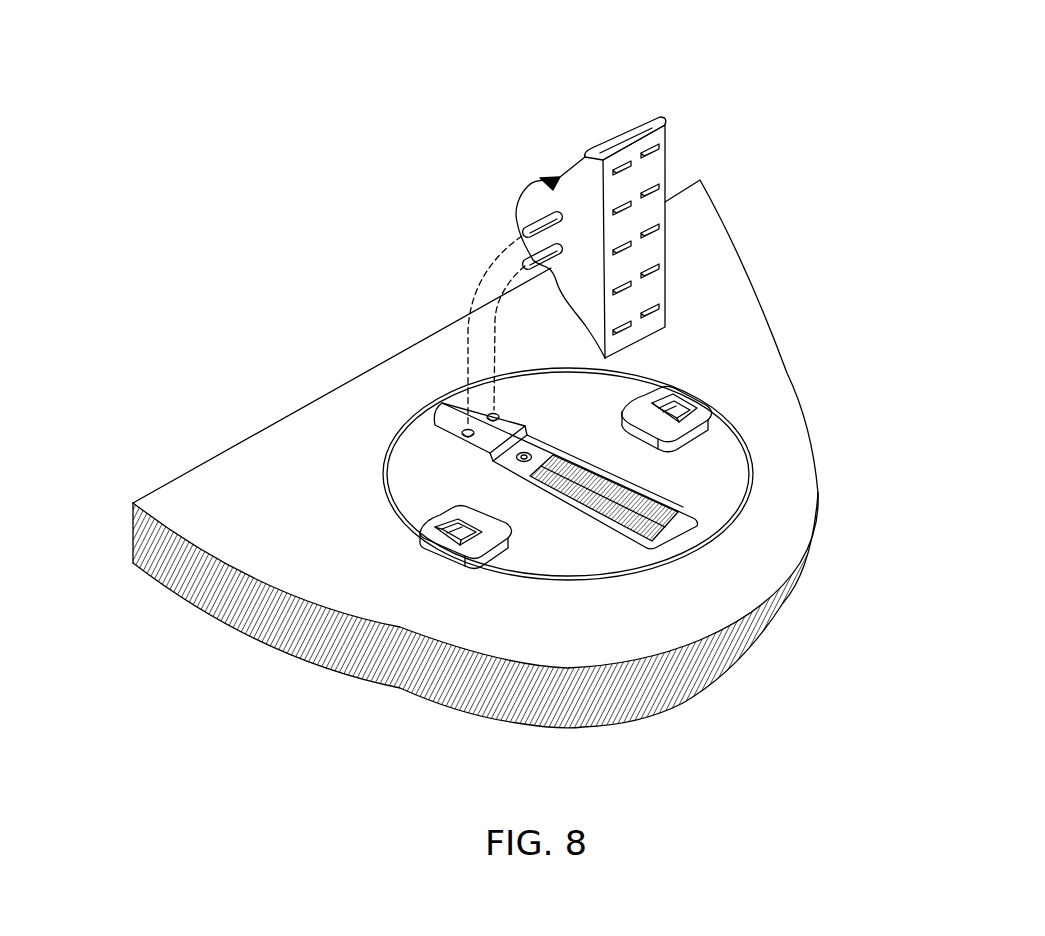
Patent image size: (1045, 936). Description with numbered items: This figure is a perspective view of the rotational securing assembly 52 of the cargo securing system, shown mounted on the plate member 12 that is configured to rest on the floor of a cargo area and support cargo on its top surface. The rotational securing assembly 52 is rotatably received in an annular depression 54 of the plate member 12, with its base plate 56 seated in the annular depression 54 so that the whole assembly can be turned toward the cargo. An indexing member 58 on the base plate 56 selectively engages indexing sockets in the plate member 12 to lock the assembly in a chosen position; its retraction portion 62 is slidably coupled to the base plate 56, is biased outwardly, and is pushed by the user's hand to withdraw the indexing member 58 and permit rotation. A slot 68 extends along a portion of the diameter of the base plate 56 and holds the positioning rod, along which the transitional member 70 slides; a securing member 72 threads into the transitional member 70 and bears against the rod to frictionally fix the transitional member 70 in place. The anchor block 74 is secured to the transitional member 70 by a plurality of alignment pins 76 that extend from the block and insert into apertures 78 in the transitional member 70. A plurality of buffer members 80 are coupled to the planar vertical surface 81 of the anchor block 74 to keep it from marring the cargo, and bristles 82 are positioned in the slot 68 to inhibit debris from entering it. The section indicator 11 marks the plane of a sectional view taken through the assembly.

The section line 11 is at (748, 350).
The plate member 12 is at (660, 700).
The rotational securing assembly 52 is at (447, 337).
The annular depression 54 is at (753, 462).
The base plate 56 is at (525, 555).
The indexing member 58 is at (708, 420).
The retraction portion 62 is at (681, 412).
The slot 68 is at (657, 493).
The transitional member 70 is at (433, 419).
The securing member 72 is at (517, 458).
The anchor block 74 is at (660, 120).
The alignment pins 76 is at (530, 258).
The apertures 78 is at (493, 414).
The buffer members 80 is at (665, 195).
The planar vertical surface 81 is at (658, 247).
The bristles 82 is at (693, 511).